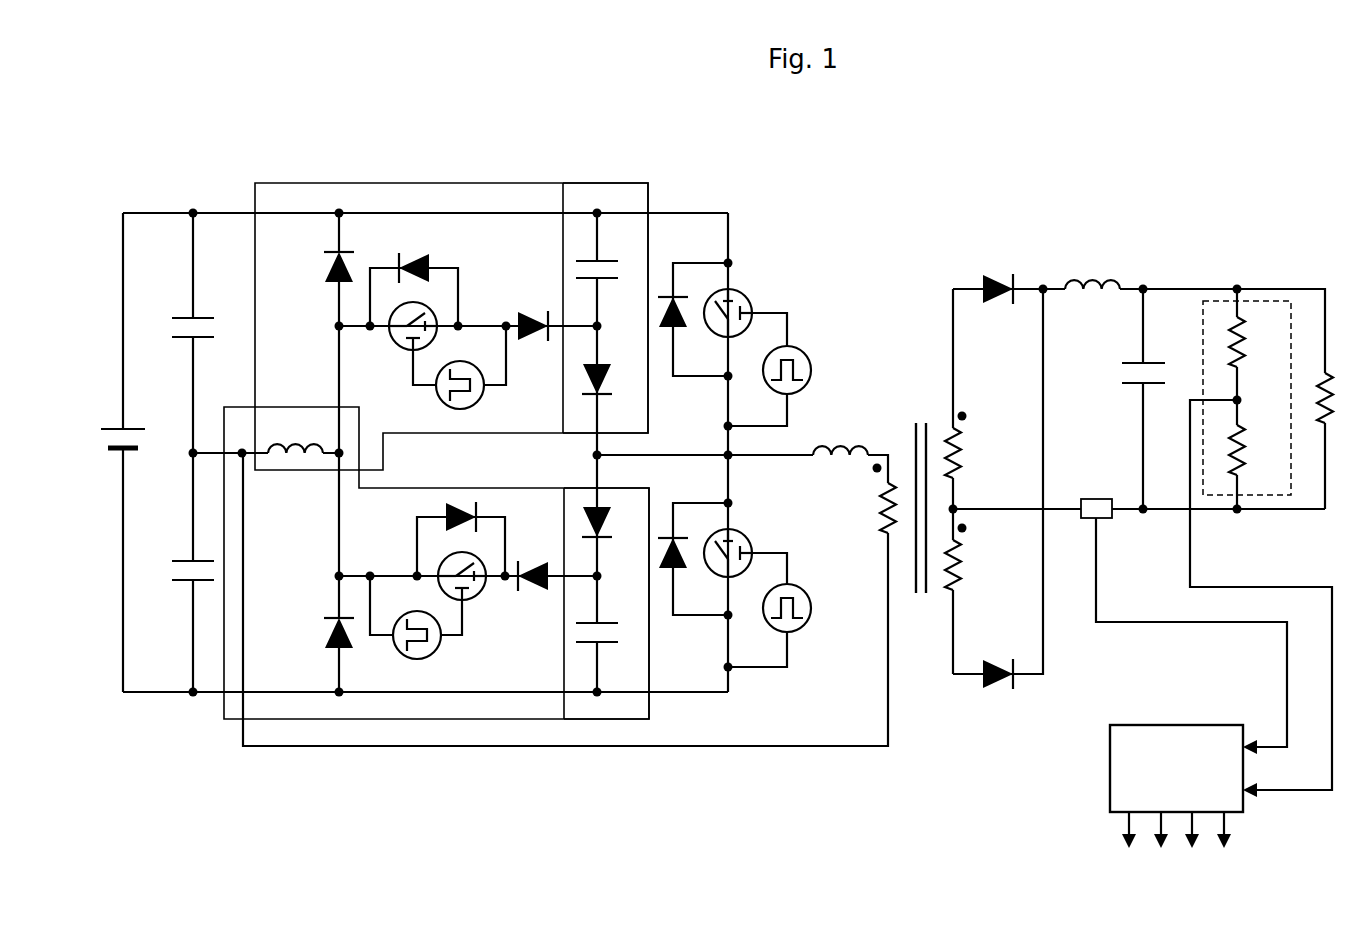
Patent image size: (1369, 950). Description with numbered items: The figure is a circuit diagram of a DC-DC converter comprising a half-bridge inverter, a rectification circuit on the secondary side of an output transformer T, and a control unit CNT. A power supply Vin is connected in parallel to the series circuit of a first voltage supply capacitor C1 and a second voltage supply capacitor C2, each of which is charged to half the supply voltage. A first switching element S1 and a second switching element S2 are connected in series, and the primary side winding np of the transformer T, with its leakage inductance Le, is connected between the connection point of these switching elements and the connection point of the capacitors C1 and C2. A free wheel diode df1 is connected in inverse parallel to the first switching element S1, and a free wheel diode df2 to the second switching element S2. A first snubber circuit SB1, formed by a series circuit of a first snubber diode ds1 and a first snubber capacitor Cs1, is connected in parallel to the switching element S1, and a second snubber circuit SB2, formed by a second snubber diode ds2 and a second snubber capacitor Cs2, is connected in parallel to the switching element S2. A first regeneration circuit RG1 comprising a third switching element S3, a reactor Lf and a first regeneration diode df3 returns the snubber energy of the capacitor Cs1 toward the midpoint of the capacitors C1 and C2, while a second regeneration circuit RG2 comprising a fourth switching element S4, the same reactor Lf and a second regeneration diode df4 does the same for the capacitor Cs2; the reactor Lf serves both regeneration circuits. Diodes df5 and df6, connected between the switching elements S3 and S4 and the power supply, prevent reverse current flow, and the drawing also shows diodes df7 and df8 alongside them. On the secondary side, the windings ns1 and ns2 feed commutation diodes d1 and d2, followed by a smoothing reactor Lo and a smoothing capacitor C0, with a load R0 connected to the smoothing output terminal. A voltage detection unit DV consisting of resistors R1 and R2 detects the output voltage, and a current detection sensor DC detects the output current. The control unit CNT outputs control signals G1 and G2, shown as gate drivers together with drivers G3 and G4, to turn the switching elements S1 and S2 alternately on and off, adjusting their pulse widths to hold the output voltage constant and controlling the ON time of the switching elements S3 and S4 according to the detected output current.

The first regeneration circuit RG1 is at (447, 183).
The second regeneration circuit RG2 is at (465, 719).
The first snubber circuit SB1 is at (602, 183).
The second snubber circuit SB2 is at (612, 719).
The power supply Vin is at (106, 452).
The first voltage supply capacitor C1 is at (178, 333).
The second voltage supply capacitor C2 is at (178, 572).
The reactor Lf is at (295, 433).
The diode df5 is at (320, 267).
The diode df6 is at (320, 633).
The seventh freewheeling diode df7 is at (431, 258).
The eighth freewheeling diode df8 is at (478, 515).
The first regeneration diode df3 is at (533, 313).
The second regeneration diode df4 is at (533, 562).
The free wheel diode df1 is at (680, 344).
The free wheel diode df2 is at (680, 569).
The first switching element S1 is at (740, 308).
The second switching element S2 is at (740, 550).
The third switching element S3 is at (405, 334).
The fourth switching element S4 is at (469, 585).
The control signal G1 is at (803, 370).
The control signal G2 is at (803, 608).
The third gate driver G3 is at (473, 391).
The fourth gate driver G4 is at (425, 645).
The first snubber capacitor Cs1 is at (609, 255).
The second snubber capacitor Cs2 is at (611, 647).
The first snubber diode ds1 is at (614, 379).
The second snubber diode ds2 is at (614, 522).
The leakage inductance Le is at (840, 436).
The primary side winding np is at (871, 508).
The output transformer T is at (920, 493).
The secondary side winding ns1 is at (974, 453).
The secondary side winding ns2 is at (974, 565).
The diode for commutation d1 is at (998, 277).
The diode for commutation d2 is at (998, 658).
The smoothing reactor Lo is at (1092, 269).
The smoothing capacitor C0 is at (1128, 374).
The current detection sensor DC is at (1096, 498).
The voltage detection unit DV is at (1277, 301).
The resistor R1 is at (1254, 342).
The resistor R2 is at (1254, 450).
The load R0 is at (1341, 398).
The control unit CNT is at (1176, 789).